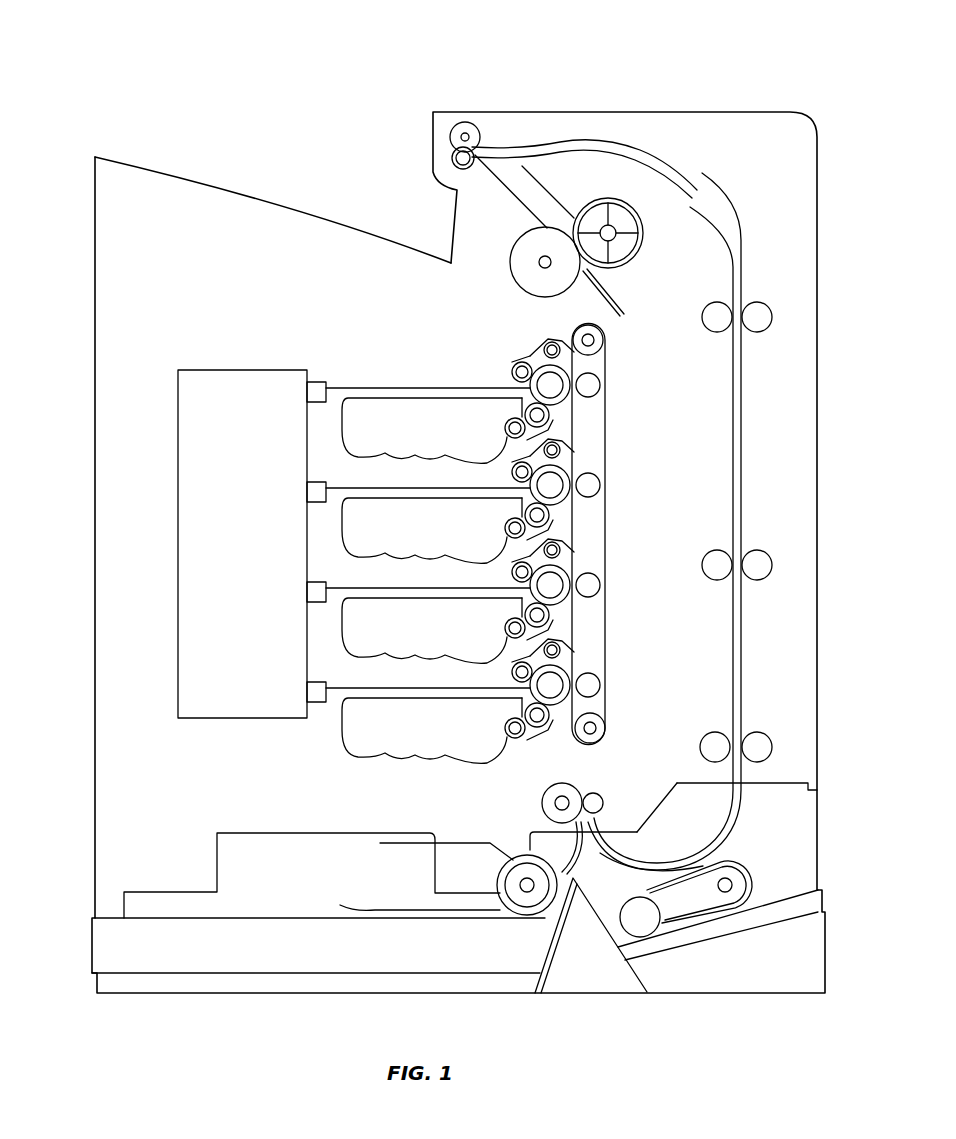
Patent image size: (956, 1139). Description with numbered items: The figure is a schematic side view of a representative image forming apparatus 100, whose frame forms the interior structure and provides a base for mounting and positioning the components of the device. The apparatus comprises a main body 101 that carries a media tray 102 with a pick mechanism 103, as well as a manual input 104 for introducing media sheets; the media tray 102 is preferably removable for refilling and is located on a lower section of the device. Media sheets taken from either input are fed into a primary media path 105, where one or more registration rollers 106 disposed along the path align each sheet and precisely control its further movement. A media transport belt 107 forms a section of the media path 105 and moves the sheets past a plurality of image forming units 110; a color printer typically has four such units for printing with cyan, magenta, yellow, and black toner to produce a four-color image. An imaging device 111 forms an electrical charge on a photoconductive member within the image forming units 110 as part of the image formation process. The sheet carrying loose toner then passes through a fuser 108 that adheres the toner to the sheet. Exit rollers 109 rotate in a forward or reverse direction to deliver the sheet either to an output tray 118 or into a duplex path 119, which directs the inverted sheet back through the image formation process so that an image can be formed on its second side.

The image forming apparatus 100 is at (648, 78).
The main body 101 is at (95, 345).
The media tray 102 is at (357, 956).
The pick mechanism 103 is at (495, 876).
The manual input 104 is at (758, 836).
The primary media path 105 is at (578, 756).
The registration rollers 106 is at (557, 782).
The media transport belt 107 is at (606, 638).
The fuser 108 is at (508, 268).
The exit rollers 109 is at (478, 136).
The image forming units 110 is at (450, 442).
The imaging device 111 is at (265, 540).
The output tray 118 is at (230, 183).
The duplex path 119 is at (742, 658).